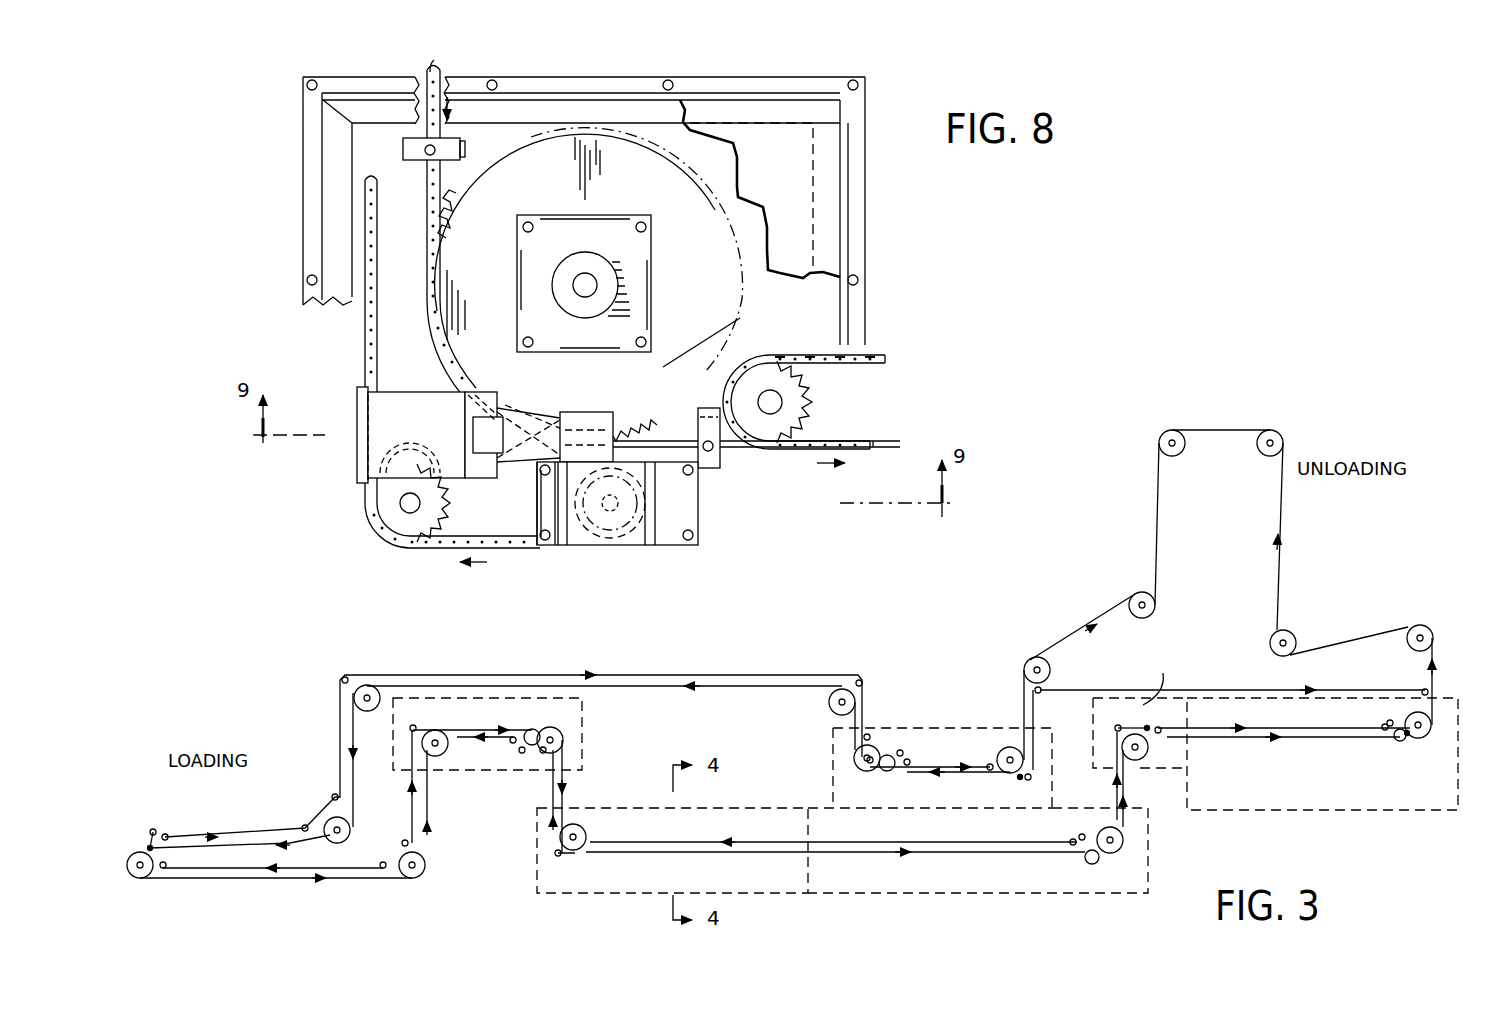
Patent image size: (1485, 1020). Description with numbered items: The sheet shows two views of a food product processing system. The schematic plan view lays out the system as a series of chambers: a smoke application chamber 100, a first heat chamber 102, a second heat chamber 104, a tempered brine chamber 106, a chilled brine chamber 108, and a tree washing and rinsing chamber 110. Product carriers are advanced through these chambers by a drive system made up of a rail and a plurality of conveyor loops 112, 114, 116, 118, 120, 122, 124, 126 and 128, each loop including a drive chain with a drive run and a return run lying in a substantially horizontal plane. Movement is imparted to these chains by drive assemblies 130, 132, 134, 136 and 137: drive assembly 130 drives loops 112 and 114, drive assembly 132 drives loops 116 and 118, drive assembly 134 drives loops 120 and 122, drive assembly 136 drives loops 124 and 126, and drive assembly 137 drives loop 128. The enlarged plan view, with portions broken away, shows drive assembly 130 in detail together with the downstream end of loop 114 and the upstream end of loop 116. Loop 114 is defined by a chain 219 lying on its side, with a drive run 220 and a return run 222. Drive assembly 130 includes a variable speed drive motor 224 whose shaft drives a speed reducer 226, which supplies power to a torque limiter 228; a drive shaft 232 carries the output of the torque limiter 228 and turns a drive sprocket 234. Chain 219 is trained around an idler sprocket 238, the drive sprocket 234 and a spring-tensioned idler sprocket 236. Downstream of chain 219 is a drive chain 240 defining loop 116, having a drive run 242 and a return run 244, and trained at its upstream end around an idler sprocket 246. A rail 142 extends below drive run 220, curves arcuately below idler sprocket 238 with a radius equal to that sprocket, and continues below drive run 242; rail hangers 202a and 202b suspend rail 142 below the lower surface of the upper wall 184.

In FIG. 3, the smoke application chamber 100 is at (587, 730).
In FIG. 3, the first heat chamber 102 is at (718, 805).
In FIG. 3, the second heat chamber 104 is at (948, 903).
In FIG. 3, the tempered brine chamber 106 is at (1092, 720).
In FIG. 3, the chilled brine chamber 108 is at (1315, 813).
In FIG. 3, the tree washing and rinsing chamber 110 is at (907, 723).
In FIG. 3, the conveyor loop 112 is at (507, 750).
In FIG. 3, the conveyor loop 114 is at (578, 791).
In FIG. 3, the conveyor loop 116 is at (703, 836).
In FIG. 3, the conveyor loop 118 is at (1108, 788).
In FIG. 3, the conveyor loop 120 is at (1288, 724).
In FIG. 3, the conveyor loop 122 is at (1296, 598).
In FIG. 3, the conveyor loop 124 is at (938, 744).
In FIG. 3, the conveyor loop 126 is at (706, 660).
In FIG. 3, the conveyor loop 128 is at (251, 887).
In FIG. 8, the drive assembly 130 is at (600, 574).
In FIG. 3, the drive assembly 130 is at (585, 873).
In FIG. 3, the drive assembly 132 is at (1158, 747).
In FIG. 3, the drive assembly 134 is at (1038, 766).
In FIG. 3, the drive assembly 136 is at (140, 832).
In FIG. 3, the drive assembly 137 is at (446, 724).
In FIG. 8, the rail 142 is at (733, 447).
In FIG. 8, the upper wall 184 is at (828, 207).
In FIG. 8, the rail hanger 202a is at (465, 150).
In FIG. 8, the rail hanger 202b is at (711, 407).
In FIG. 8, the chain 219 is at (330, 332).
In FIG. 8, the drive run 220 is at (427, 217).
In FIG. 8, the return run 222 is at (377, 268).
In FIG. 8, the variable speed drive motor 224 is at (430, 390).
In FIG. 8, the speed reducer 226 is at (593, 412).
In FIG. 8, the torque limiter 228 is at (630, 550).
In FIG. 8, the drive shaft 232 is at (650, 503).
In FIG. 8, the drive sprocket 234 is at (570, 537).
In FIG. 8, the spring-tensioned idler sprocket 236 is at (443, 527).
In FIG. 8, the idler sprocket 238 is at (738, 327).
In FIG. 8, the drive chain 240 is at (918, 396).
In FIG. 8, the drive run 242 is at (851, 432).
In FIG. 8, the return run 244 is at (882, 352).
In FIG. 8, the idler sprocket 246 is at (813, 393).